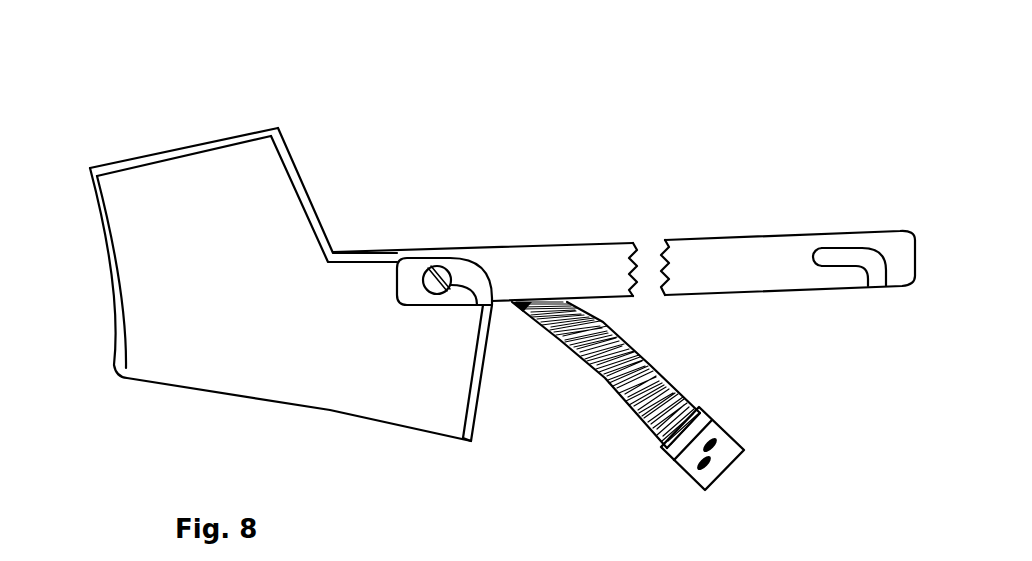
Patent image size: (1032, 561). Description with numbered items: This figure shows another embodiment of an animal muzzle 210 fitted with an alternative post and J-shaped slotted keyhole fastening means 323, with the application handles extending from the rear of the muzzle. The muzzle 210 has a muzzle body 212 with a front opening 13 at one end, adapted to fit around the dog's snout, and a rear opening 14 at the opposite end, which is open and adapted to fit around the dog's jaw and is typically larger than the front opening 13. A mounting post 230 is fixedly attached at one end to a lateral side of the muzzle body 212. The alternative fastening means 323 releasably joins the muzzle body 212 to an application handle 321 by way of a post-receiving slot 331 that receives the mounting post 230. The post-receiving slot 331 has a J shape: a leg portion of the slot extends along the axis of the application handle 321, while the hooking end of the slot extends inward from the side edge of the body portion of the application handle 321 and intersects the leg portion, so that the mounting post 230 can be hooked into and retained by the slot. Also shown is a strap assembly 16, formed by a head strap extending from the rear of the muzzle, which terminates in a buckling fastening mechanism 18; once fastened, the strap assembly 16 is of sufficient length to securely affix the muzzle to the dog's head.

The muzzle 210 is at (240, 76).
The front opening 13 is at (97, 283).
The muzzle body 212 is at (278, 352).
The rear opening 14 is at (492, 390).
The alternative fastening means 323 is at (452, 213).
The mounting post 230 is at (430, 266).
The post-receiving slot 331 is at (481, 266).
The application handle 321 is at (690, 257).
The strap assembly 16 is at (618, 395).
The buckling fastening mechanism 18 is at (712, 474).